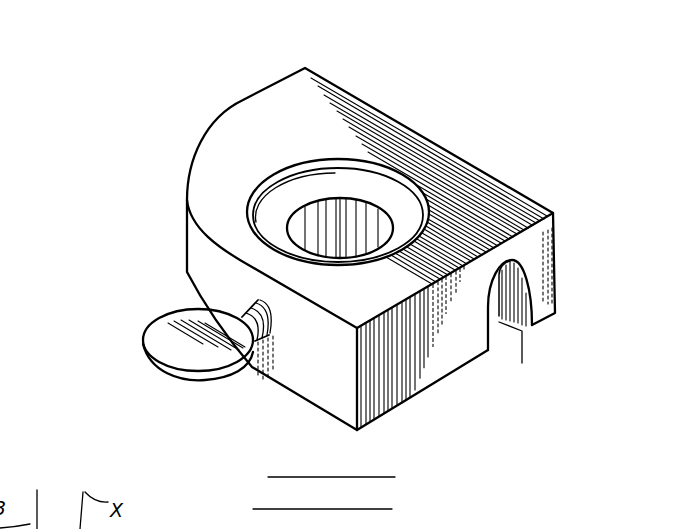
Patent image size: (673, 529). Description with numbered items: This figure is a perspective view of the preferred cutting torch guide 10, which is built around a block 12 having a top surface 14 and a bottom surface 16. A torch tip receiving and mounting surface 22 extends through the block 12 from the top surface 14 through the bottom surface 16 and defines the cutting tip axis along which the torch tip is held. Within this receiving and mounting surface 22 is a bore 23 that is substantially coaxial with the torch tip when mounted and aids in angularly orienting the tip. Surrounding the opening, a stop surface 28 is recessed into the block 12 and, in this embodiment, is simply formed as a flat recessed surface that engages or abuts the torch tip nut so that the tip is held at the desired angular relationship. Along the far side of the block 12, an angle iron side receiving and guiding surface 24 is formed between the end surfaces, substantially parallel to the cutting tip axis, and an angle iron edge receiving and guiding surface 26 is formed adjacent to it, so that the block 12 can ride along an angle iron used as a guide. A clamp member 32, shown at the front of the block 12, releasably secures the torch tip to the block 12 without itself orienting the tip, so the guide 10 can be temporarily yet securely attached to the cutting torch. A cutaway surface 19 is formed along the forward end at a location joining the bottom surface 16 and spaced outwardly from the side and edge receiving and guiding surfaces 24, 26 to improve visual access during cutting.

The cutting torch guide 10 is at (543, 101).
The block 12 is at (417, 133).
The top surface 14 is at (288, 141).
The bottom surface 16 is at (408, 400).
The cutaway surface 19 is at (189, 283).
The torch tip receiving and mounting surface 22 is at (278, 183).
The bore 23 is at (350, 250).
The angle iron side receiving and guiding surface 24 is at (490, 329).
The angle iron edge receiving and guiding surface 26 is at (500, 263).
The stop surface 28 is at (273, 207).
The clamp member 32 is at (163, 374).